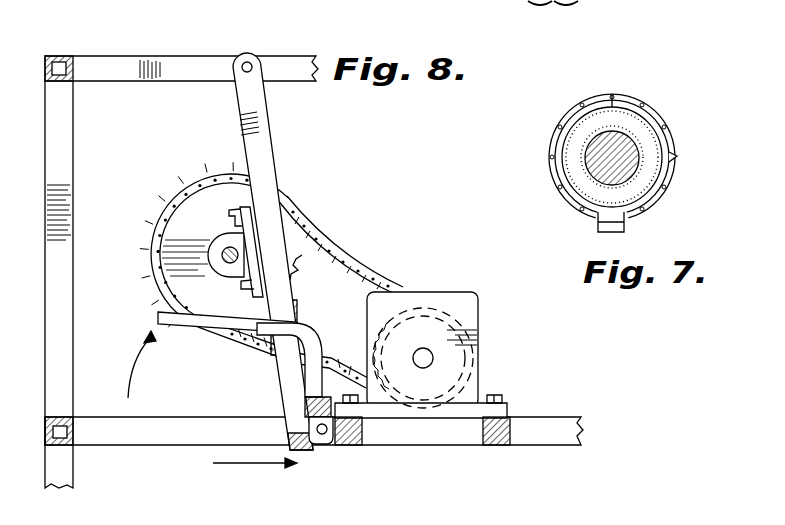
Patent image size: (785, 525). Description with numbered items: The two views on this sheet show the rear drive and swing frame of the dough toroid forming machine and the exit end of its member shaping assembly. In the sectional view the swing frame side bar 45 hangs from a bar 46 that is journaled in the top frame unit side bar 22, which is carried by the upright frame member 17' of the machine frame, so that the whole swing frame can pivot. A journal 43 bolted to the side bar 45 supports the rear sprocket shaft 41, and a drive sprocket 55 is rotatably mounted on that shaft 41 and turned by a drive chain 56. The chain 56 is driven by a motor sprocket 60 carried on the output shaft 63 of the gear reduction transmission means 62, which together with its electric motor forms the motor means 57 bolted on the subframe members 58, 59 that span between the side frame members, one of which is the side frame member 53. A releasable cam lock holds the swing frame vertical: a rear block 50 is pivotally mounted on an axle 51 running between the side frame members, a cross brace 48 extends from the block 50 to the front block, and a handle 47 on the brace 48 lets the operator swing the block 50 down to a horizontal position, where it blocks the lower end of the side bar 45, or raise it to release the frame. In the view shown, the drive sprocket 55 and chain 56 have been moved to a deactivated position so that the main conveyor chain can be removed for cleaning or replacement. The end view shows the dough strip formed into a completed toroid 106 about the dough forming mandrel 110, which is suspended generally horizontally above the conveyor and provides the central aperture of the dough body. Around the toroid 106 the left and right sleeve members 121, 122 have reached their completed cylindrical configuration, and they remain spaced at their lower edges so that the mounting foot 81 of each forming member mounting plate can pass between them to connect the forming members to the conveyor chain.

In FIG. 8, the top frame unit side bar 22 is at (135, 62).
In FIG. 8, the vertical frame member 17' is at (82, 284).
In FIG. 8, the side frame member 53 is at (147, 428).
In FIG. 8, the bar 46 is at (255, 57).
In FIG. 8, the swing frame side bar 45 is at (257, 116).
In FIG. 8, the journal 43 is at (253, 223).
In FIG. 8, the rear sprocket shaft 41 is at (225, 250).
In FIG. 8, the drive sprocket 55 is at (216, 197).
In FIG. 8, the drive chain 56 is at (325, 240).
In FIG. 8, the handle 47 is at (158, 320).
In FIG. 8, the rear block 50 is at (331, 353).
In FIG. 8, the cross brace 48 is at (278, 400).
In FIG. 8, the axle 51 is at (323, 444).
In FIG. 8, the motor sprocket 60 is at (427, 323).
In FIG. 8, the gear reduction transmission means 62 is at (458, 305).
In FIG. 8, the motor means 57 is at (480, 343).
In FIG. 8, the output shaft 63 is at (423, 363).
In FIG. 8, the subframe member 58 is at (358, 430).
In FIG. 8, the subframe member 59 is at (510, 433).
In FIG. 7, the right sleeve member 122 is at (570, 110).
In FIG. 7, the toroid 106 is at (572, 157).
In FIG. 7, the dough forming mandrel 110 is at (617, 142).
In FIG. 7, the mounting foot 81 is at (600, 223).
In FIG. 7, the left sleeve member 121 is at (673, 160).